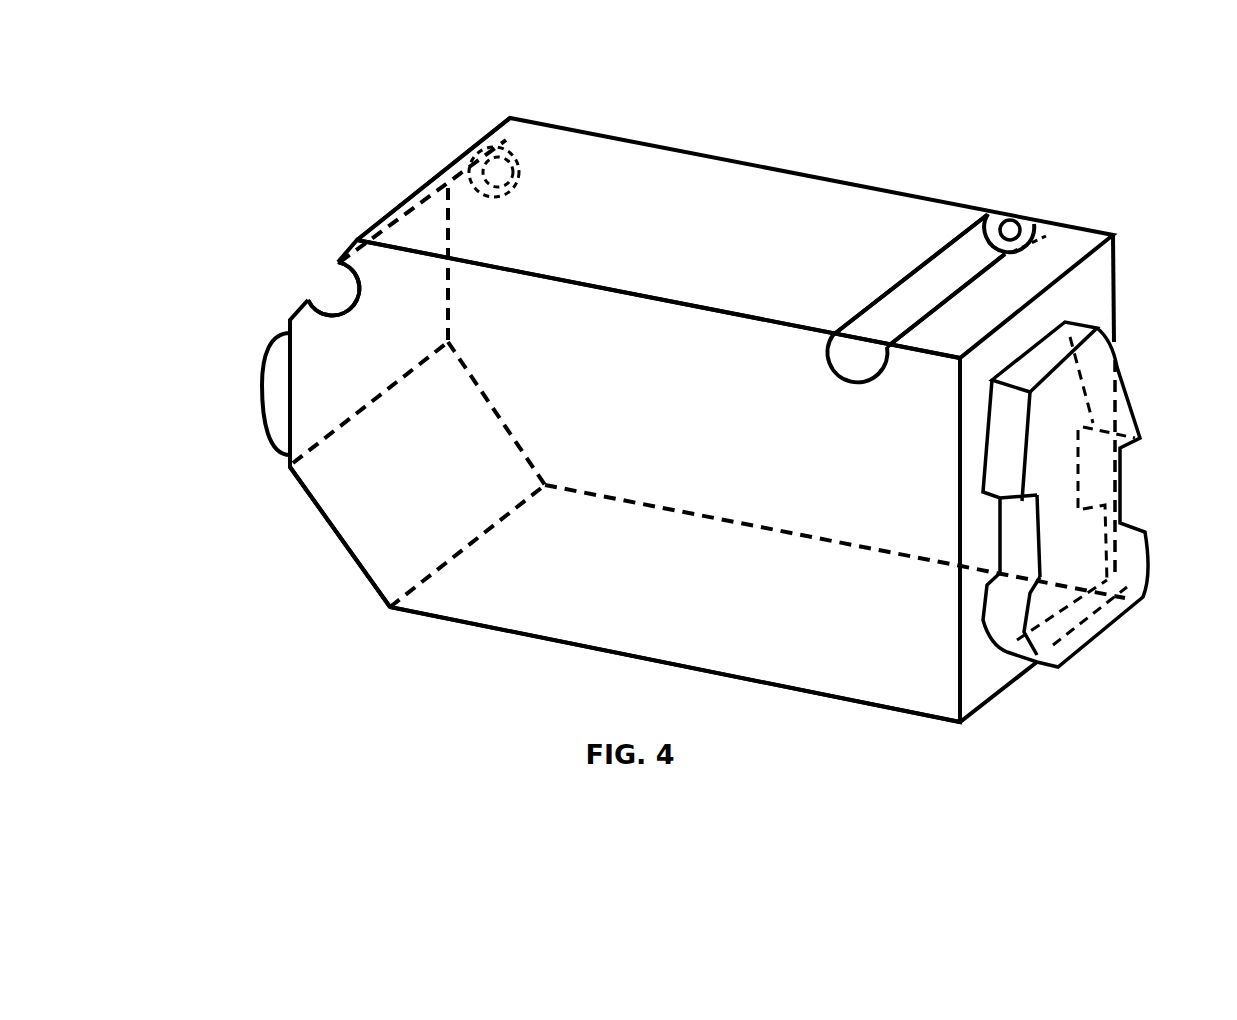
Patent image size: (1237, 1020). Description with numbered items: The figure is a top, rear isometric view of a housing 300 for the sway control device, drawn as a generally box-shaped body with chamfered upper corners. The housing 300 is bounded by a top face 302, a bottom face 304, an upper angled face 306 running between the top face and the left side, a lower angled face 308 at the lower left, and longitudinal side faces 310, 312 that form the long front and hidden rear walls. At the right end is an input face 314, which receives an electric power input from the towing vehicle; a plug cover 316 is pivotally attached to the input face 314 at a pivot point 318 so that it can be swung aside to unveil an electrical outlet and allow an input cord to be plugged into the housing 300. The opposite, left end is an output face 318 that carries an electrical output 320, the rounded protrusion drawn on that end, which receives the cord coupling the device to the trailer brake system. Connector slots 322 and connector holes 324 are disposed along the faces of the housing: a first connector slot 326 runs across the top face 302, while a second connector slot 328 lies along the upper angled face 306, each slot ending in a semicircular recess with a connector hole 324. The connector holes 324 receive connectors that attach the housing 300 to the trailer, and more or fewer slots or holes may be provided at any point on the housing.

The housing 300 is at (894, 121).
The top face 302 is at (690, 222).
The bottom face 304 is at (875, 642).
The upper angled face 306 is at (407, 197).
The lower angled face 308 is at (383, 503).
The longitudinal side face 310 is at (737, 352).
The longitudinal side face 312 is at (607, 454).
The input face 314 is at (1063, 323).
The plug cover 316 is at (1062, 417).
The output face 318 is at (338, 360).
The electrical output 320 is at (268, 388).
The connector slots 322 is at (340, 287).
The connector holes 324 is at (496, 168).
The first connector slot 326 is at (937, 275).
The second connector slot 328 is at (334, 300).